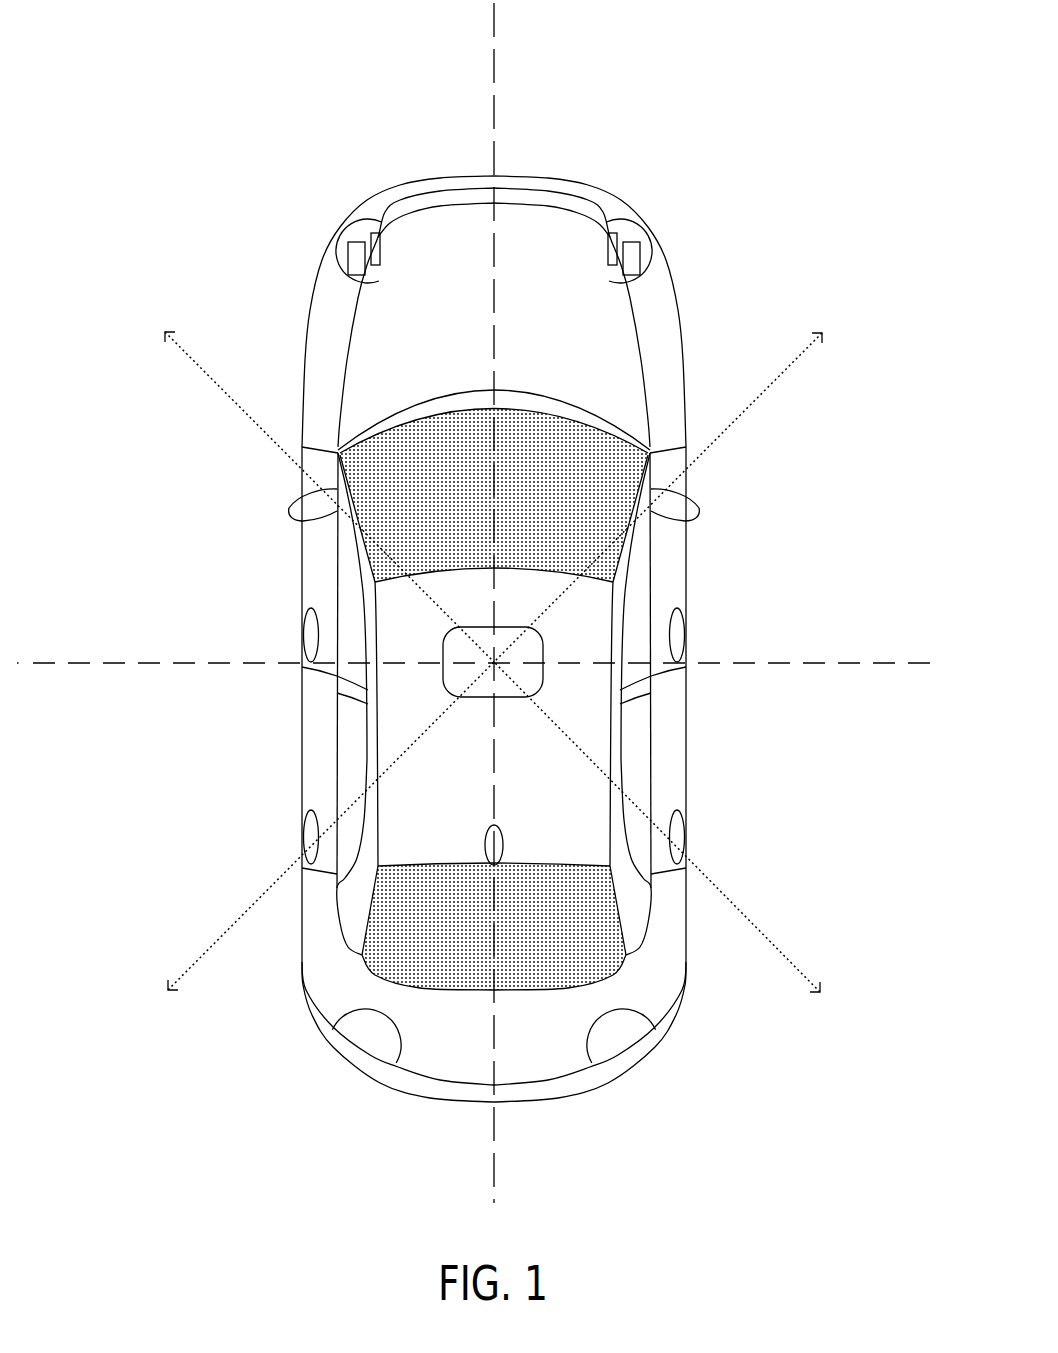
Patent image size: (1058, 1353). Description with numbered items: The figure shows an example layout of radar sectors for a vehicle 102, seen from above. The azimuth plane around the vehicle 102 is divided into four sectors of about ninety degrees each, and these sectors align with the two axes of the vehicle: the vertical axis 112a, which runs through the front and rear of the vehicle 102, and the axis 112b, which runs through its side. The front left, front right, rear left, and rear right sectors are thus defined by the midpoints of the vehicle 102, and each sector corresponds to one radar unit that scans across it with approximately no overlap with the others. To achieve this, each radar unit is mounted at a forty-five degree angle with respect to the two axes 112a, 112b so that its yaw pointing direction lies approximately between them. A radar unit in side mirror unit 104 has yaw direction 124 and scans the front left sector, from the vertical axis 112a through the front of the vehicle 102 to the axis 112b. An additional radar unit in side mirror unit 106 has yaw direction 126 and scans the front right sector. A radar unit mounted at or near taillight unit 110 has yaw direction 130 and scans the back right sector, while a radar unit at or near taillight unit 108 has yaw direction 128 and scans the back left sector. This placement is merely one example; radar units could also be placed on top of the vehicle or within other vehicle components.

The vehicle 102 is at (430, 258).
The side mirror unit 104 is at (293, 503).
The side mirror unit 106 is at (698, 503).
The taillight unit 108 is at (362, 1035).
The taillight unit 110 is at (640, 1032).
The vertical axis 112a is at (494, 1160).
The axis 112b is at (173, 663).
The yaw direction 124 is at (198, 363).
The yaw direction 126 is at (790, 367).
The yaw direction 128 is at (198, 962).
The yaw direction 130 is at (753, 922).